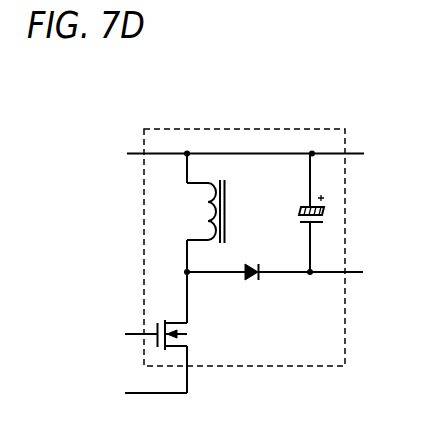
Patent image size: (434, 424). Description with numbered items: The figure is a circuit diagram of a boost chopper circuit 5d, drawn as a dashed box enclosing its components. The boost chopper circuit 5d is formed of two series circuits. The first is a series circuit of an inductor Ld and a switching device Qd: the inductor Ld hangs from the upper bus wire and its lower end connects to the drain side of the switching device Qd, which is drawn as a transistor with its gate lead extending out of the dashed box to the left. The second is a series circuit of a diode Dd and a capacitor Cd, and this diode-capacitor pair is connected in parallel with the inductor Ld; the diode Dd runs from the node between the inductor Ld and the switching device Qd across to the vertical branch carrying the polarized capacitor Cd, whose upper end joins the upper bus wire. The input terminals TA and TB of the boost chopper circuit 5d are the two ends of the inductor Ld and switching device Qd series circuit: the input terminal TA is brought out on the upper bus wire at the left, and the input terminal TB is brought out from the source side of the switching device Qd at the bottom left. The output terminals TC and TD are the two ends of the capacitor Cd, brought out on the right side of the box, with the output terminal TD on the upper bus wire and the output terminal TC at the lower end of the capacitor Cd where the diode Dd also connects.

The boost chopper circuit 5d is at (280, 129).
The input terminal TA is at (139, 153).
The input terminal TB is at (138, 393).
The output terminal TC is at (354, 273).
The output terminal TD is at (354, 155).
The inductor Ld is at (192, 211).
The capacitor Cd is at (294, 213).
The diode Dd is at (253, 291).
The switching device Qd is at (174, 337).